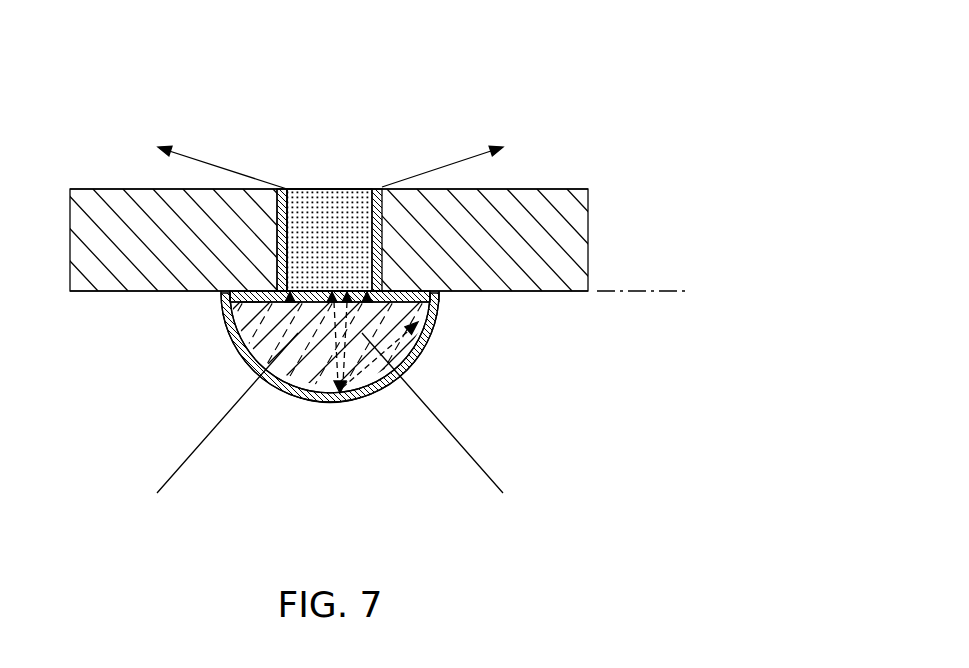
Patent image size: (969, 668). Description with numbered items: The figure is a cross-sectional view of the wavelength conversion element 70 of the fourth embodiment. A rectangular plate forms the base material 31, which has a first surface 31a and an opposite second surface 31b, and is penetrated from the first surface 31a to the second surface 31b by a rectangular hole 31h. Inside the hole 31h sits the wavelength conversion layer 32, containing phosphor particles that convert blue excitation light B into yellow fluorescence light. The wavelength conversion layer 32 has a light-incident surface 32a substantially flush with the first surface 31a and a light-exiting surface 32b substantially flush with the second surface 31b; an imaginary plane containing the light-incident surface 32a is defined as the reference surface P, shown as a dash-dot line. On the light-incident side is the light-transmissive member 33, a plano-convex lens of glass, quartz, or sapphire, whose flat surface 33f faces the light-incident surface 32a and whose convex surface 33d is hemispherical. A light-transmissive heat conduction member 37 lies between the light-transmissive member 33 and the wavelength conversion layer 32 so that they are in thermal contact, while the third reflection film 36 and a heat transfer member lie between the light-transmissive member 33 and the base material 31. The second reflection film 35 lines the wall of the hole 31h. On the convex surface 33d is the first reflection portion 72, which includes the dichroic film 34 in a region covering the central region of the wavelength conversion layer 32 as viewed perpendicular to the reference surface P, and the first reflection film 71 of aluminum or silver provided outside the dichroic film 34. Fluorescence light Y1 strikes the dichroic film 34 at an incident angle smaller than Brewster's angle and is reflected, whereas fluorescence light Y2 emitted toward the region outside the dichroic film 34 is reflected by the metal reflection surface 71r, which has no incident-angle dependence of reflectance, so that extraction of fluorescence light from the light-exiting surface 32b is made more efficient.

The wavelength conversion element 70 is at (344, 264).
The base material 31 is at (488, 189).
The first surface 31a is at (558, 292).
The second surface 31b is at (547, 189).
The hole 31h is at (370, 178).
The wavelength conversion layer 32 is at (362, 188).
The light-incident surface 32a is at (315, 303).
The light-exiting surface 32b is at (337, 188).
The light-transmissive member 33 is at (284, 382).
The convex surface 33d is at (372, 392).
The flat surface 33f is at (426, 299).
The dichroic film 34 is at (296, 398).
The second reflection film 35 is at (278, 291).
The third reflection film 36 is at (258, 302).
The heat conduction member 37 is at (268, 366).
The first reflection film 71 is at (237, 353).
The reflection surface 71r is at (240, 302).
The first reflection portion 72 is at (325, 312).
The fluorescence light Y1 is at (193, 150).
The fluorescence light Y2 is at (428, 347).
The blue excitation light B is at (170, 478).
The reference surface P is at (647, 291).